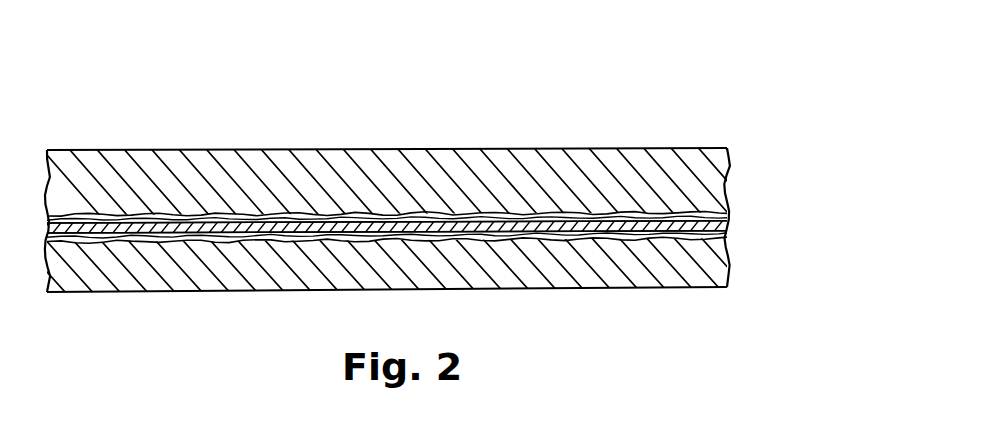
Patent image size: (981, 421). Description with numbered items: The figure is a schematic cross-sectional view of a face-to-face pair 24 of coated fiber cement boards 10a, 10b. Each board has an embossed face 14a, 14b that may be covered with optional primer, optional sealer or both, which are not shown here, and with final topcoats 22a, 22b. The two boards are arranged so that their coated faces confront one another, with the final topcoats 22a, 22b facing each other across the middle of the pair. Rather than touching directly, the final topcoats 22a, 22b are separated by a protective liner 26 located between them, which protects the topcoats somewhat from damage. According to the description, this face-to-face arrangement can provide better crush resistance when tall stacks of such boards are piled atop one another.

The face-to-face pair 24 is at (603, 117).
The coated fiber cement board 10a is at (715, 175).
The coated fiber cement board 10b is at (713, 261).
The embossed face 14a is at (165, 215).
The embossed face 14b is at (163, 242).
The final topcoat 22a is at (725, 211).
The final topcoat 22b is at (725, 235).
The protective liner 26 is at (725, 226).